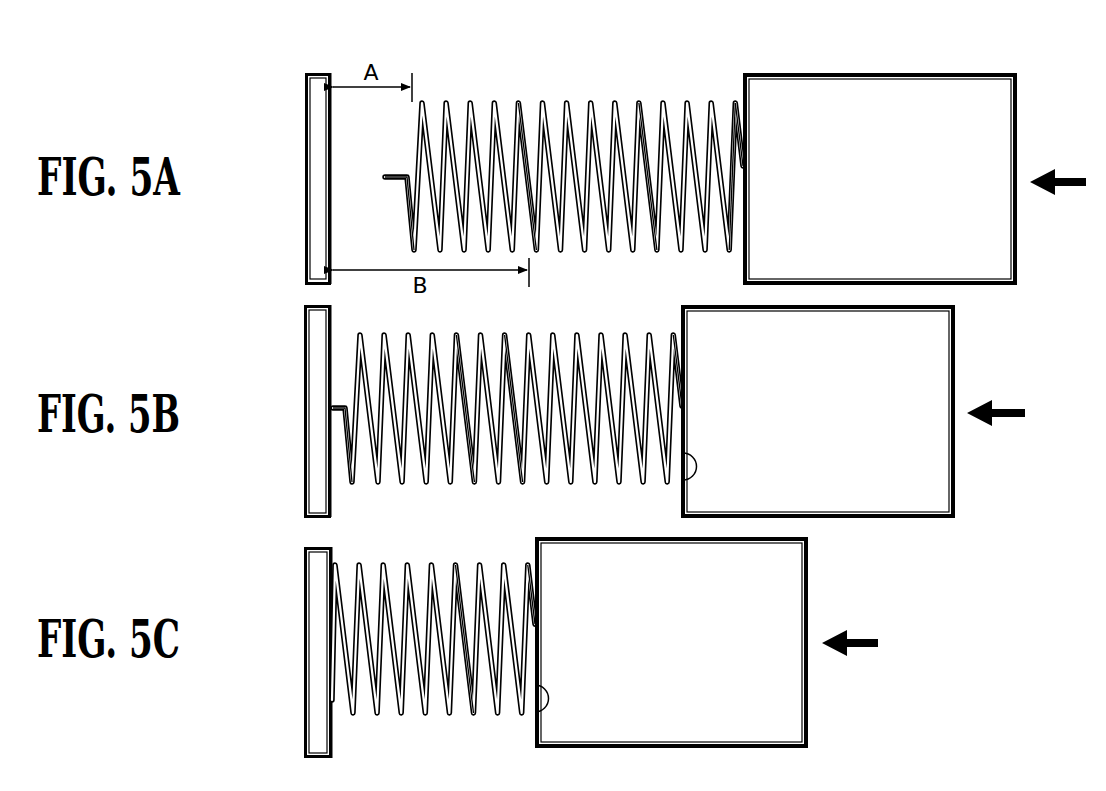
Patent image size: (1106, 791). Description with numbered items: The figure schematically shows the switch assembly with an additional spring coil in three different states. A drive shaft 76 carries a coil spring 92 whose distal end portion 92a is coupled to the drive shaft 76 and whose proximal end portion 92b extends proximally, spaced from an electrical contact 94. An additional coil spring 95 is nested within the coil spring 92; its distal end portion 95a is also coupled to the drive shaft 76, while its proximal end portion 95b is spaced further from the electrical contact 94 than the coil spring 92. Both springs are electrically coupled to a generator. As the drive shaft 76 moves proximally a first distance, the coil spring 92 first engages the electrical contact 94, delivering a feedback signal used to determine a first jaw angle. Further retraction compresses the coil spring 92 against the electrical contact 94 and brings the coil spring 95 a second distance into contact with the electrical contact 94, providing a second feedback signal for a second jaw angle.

In FIG. 5A, the drive shaft 76 is at (1016, 98).
In FIG. 5B, the drive shaft 76 is at (957, 371).
In FIG. 5C, the drive shaft 76 is at (810, 590).
In FIG. 5A, the coil spring 92 is at (470, 103).
In FIG. 5B, the coil spring 92 is at (457, 335).
In FIG. 5C, the coil spring 92 is at (333, 565).
In FIG. 5A, the distal end portion 92a is at (745, 138).
In FIG. 5B, the distal end portion 92a is at (683, 380).
In FIG. 5C, the distal end portion 92a is at (535, 617).
In FIG. 5A, the proximal end portion 92b is at (385, 177).
In FIG. 5B, the proximal end portion 92b is at (332, 410).
In FIG. 5A, the electrical contact 94 is at (305, 110).
In FIG. 5B, the electrical contact 94 is at (305, 339).
In FIG. 5C, the electrical contact 94 is at (304, 600).
In FIG. 5A, the additional coil spring 95 is at (656, 135).
In FIG. 5B, the additional coil spring 95 is at (518, 367).
In FIG. 5C, the additional coil spring 95 is at (468, 590).
In FIG. 5A, the distal end portion 95a is at (742, 222).
In FIG. 5B, the distal end portion 95a is at (684, 481).
In FIG. 5C, the distal end portion 95a is at (535, 713).
In FIG. 5A, the proximal end portion 95b is at (533, 130).
In FIG. 5B, the proximal end portion 95b is at (459, 413).